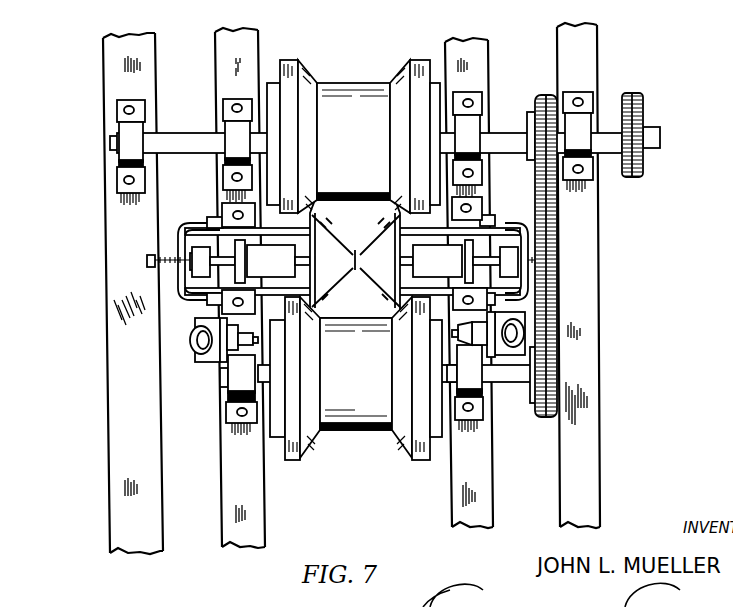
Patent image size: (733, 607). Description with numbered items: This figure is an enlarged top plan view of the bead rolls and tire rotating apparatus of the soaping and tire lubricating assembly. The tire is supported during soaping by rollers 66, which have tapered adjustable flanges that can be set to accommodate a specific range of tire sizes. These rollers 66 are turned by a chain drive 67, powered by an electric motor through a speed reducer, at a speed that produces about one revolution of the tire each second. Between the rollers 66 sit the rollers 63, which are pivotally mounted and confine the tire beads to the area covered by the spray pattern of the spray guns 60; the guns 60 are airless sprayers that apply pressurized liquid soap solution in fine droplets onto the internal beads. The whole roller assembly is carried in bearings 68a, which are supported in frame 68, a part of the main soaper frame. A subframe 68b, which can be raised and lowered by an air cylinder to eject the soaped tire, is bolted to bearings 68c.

The spray gun 60 is at (193, 337).
The roller 63 is at (382, 284).
The roller 66 is at (367, 87).
The chain drive 67 is at (543, 417).
The frame 68 is at (155, 67).
The bearing 68a is at (117, 113).
The subframe 68b is at (258, 42).
The bearing 68c is at (227, 100).